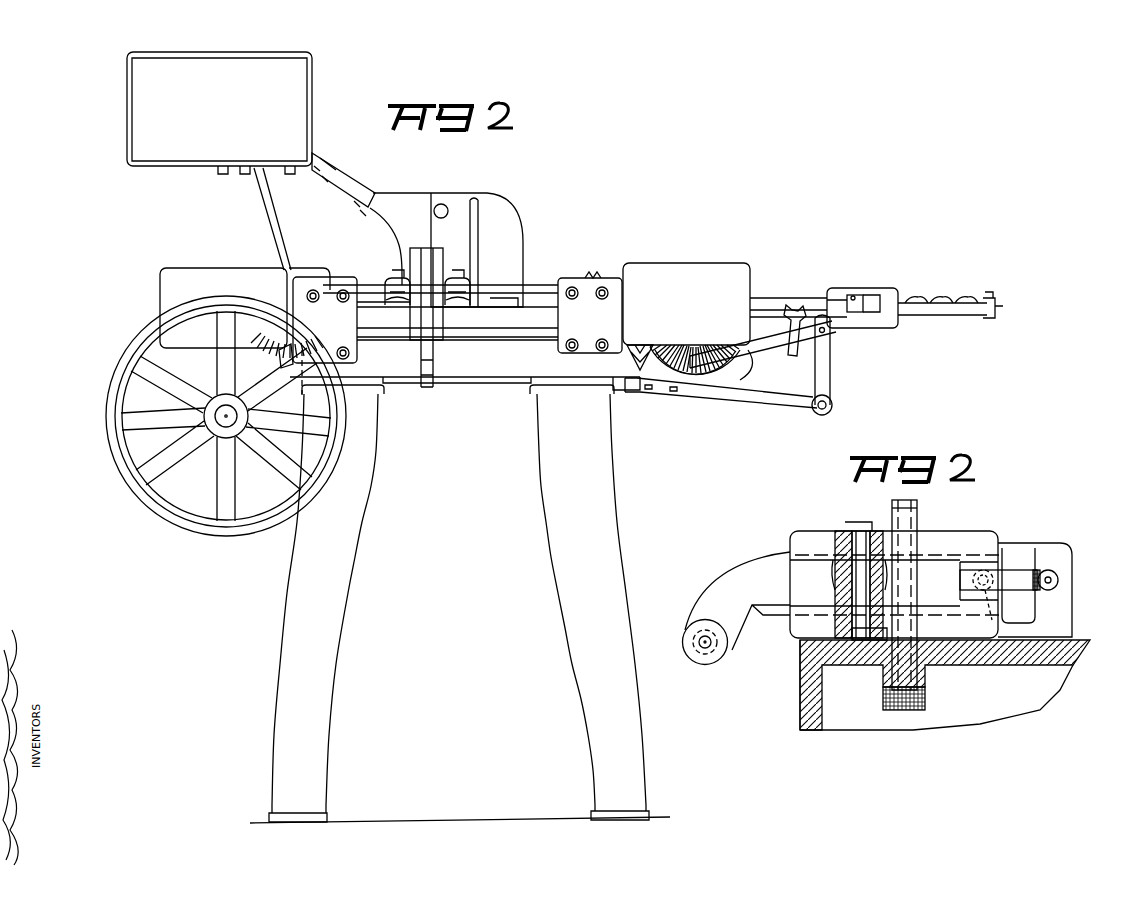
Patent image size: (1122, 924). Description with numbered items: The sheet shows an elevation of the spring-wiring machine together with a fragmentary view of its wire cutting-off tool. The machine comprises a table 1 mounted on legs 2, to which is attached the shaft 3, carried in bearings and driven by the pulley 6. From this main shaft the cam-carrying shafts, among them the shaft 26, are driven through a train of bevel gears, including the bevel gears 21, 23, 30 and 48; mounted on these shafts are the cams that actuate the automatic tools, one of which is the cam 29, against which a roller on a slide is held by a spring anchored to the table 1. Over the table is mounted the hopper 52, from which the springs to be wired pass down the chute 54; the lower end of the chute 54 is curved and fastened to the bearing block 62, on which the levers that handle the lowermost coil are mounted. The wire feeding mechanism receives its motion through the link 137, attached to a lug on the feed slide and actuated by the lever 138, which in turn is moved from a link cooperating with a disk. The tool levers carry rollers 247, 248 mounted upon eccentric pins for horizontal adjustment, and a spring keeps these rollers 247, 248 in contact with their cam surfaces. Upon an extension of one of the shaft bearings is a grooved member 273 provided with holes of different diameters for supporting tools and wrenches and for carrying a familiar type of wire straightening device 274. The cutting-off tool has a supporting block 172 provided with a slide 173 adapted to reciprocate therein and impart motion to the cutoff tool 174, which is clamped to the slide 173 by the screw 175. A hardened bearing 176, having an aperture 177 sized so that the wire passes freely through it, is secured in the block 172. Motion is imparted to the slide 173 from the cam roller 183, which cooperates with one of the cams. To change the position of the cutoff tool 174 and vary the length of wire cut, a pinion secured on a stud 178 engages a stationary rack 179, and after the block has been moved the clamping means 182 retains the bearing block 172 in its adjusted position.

In FIG. 2, the table 1 is at (488, 378).
In FIG. 3, the table 1 is at (813, 730).
In FIG. 2, the legs 2 is at (368, 492).
In FIG. 2, the shaft 3 is at (217, 418).
In FIG. 2, the pulley 6 is at (106, 396).
In FIG. 2, the bevel gear 21 is at (165, 335).
In FIG. 2, the bevel gear 23 is at (283, 350).
In FIG. 2, the shaft 26 is at (380, 337).
In FIG. 2, the cam 29 is at (431, 390).
In FIG. 2, the bevel gear 30 is at (640, 368).
In FIG. 2, the bevel gear 48 is at (722, 380).
In FIG. 2, the hopper 52 is at (133, 118).
In FIG. 2, the chute 54 is at (350, 180).
In FIG. 2, the bearing block 62 is at (492, 208).
In FIG. 2, the link 137 is at (752, 350).
In FIG. 2, the lever 138 is at (834, 366).
In FIG. 2, the roller 247 is at (466, 288).
In FIG. 2, the roller 248 is at (388, 283).
In FIG. 2, the grooved member 273 is at (808, 300).
In FIG. 2, the wire straightening device 274 is at (950, 318).
In FIG. 3, the supporting block 172 is at (1037, 548).
In FIG. 3, the slide 173 is at (770, 560).
In FIG. 3, the cutoff tool 174 is at (1022, 573).
In FIG. 3, the screw 175 is at (990, 615).
In FIG. 3, the hardened bearing 176 is at (1052, 570).
In FIG. 3, the aperture 177 is at (1058, 580).
In FIG. 3, the stud 178 is at (835, 540).
In FIG. 3, the stationary rack 179 is at (867, 660).
In FIG. 3, the clamping means 182 is at (926, 705).
In FIG. 3, the cam roller 183 is at (692, 662).